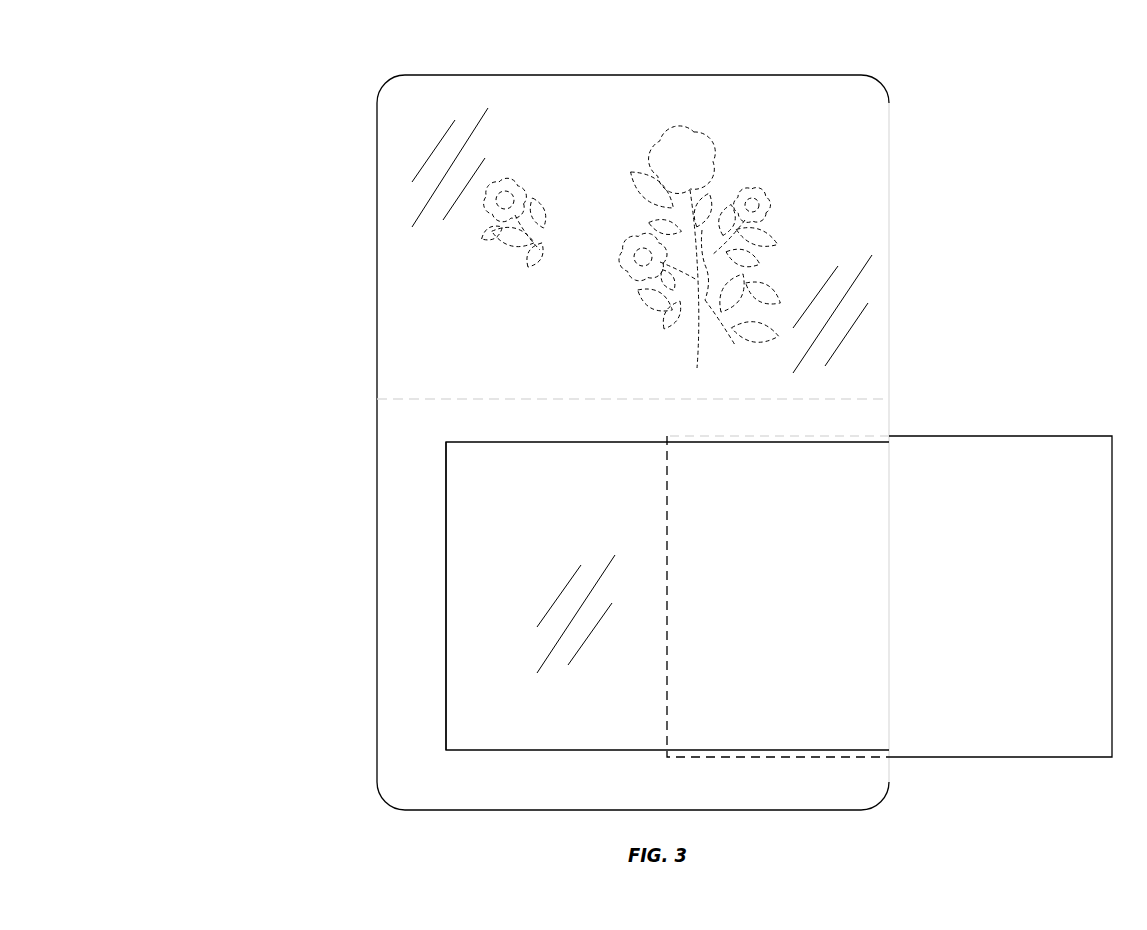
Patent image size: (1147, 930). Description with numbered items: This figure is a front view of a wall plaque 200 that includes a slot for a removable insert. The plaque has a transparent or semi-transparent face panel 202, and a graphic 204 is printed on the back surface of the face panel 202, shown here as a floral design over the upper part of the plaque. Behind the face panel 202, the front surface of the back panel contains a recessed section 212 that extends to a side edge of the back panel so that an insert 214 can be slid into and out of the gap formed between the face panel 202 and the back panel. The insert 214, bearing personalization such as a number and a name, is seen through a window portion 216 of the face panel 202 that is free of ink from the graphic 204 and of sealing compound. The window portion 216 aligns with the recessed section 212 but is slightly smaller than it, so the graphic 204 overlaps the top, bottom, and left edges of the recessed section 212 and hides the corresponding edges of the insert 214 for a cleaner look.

The wall plaque 200 is at (276, 120).
The face panel 202 is at (420, 581).
The graphic 204 is at (666, 138).
The recessed section 212 is at (480, 471).
The insert 214 is at (998, 455).
The window portion 216 is at (446, 696).